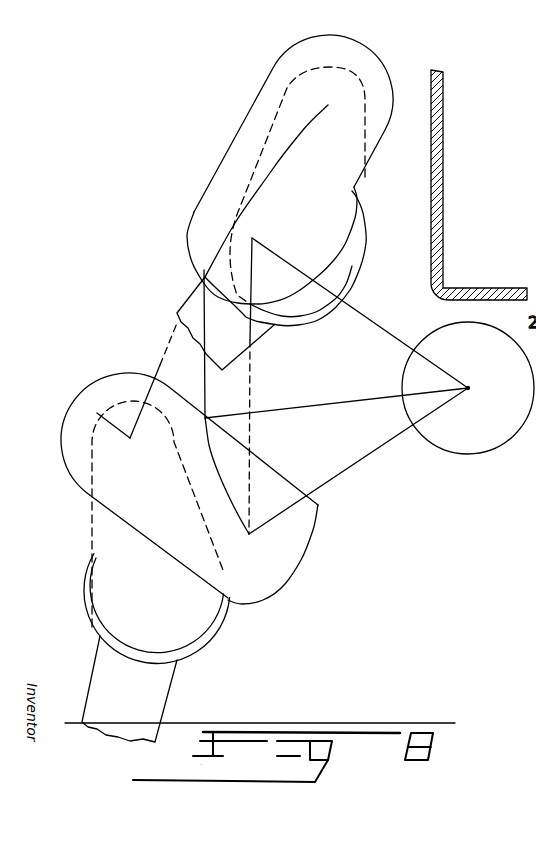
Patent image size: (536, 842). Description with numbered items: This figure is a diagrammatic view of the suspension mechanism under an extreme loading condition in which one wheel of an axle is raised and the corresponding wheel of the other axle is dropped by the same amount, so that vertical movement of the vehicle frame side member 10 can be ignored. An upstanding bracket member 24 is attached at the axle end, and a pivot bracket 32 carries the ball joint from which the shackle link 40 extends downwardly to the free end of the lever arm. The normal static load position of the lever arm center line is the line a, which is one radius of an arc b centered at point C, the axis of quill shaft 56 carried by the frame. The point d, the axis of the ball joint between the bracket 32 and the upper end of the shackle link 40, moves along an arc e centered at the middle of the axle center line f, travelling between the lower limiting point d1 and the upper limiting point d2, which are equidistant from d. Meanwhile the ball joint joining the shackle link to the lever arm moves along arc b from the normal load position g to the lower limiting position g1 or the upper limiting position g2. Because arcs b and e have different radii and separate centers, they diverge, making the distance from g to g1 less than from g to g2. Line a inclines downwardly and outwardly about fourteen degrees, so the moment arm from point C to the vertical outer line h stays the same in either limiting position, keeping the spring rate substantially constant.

The vehicle frame side member 10 is at (444, 101).
The bracket member 24 is at (176, 313).
The pivot bracket 32 is at (366, 217).
The shackle link 40 is at (224, 157).
The quill shaft 56 is at (473, 455).
The axis of quill shaft C is at (471, 391).
The center line of the lever arm a is at (305, 410).
The arc of lever arm ball joint b is at (212, 455).
The ball joint axis between bracket and shackle link d is at (204, 277).
The lower limiting point d1 is at (97, 413).
The upper limiting point d2 is at (328, 105).
The arc of bracket ball joint e is at (163, 350).
The center line of axle f is at (410, 722).
The normal load position g is at (204, 419).
The lower limiting position g1 is at (250, 535).
The upper limiting position g2 is at (253, 238).
The vertical outer line h is at (250, 377).